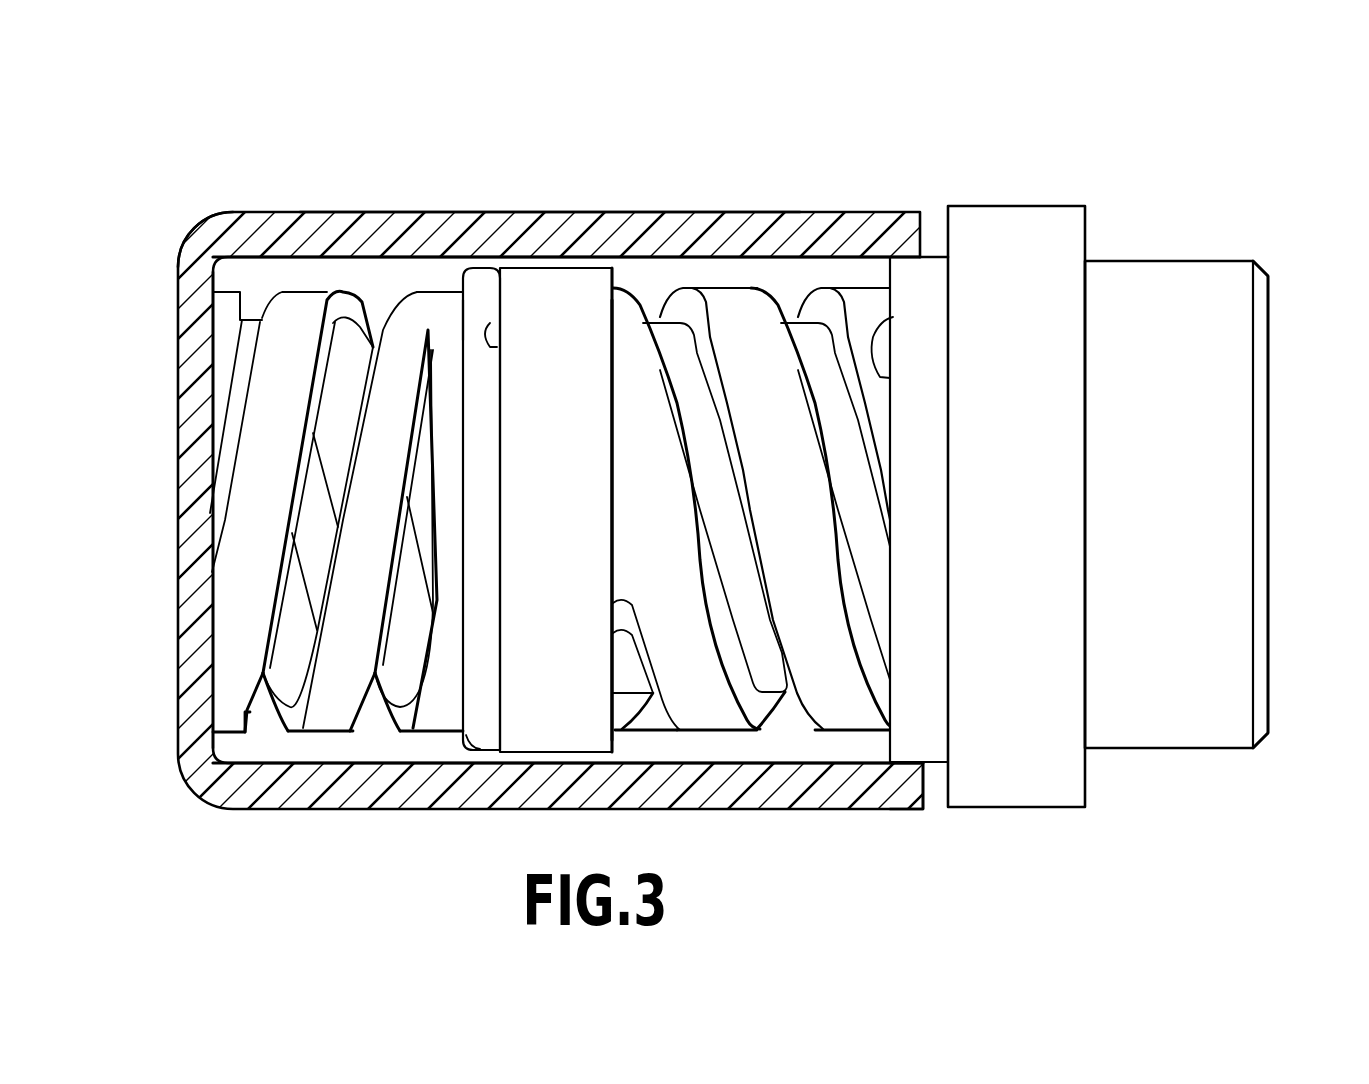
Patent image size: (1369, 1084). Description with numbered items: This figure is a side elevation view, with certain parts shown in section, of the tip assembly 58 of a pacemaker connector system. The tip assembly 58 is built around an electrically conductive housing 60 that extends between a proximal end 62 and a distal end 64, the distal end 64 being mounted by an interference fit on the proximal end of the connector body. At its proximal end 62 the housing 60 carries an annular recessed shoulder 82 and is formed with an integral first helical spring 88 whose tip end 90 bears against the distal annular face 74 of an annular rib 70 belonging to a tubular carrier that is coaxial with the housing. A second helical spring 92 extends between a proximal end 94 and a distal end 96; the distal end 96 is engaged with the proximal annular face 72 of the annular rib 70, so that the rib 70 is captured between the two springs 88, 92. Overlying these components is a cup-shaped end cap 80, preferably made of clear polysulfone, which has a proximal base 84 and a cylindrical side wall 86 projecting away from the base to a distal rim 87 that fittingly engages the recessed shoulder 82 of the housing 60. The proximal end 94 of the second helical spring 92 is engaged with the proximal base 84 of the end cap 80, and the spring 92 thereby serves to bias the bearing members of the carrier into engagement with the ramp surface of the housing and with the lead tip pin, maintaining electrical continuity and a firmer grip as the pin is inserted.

The tip assembly 58 is at (460, 145).
The housing 60 is at (1182, 258).
The proximal end of the housing 62 is at (490, 323).
The distal end of the housing 64 is at (1270, 518).
The annular rib 70 is at (481, 284).
The proximal annular face 72 is at (463, 328).
The distal annular face 74 is at (503, 410).
The end cap 80 is at (293, 232).
The annular recessed shoulder 82 is at (932, 252).
The proximal base 84 is at (184, 496).
The cylindrical side wall 86 is at (750, 226).
The distal rim 87 is at (927, 788).
The first helical spring 88 is at (712, 708).
The tip end 90 is at (610, 487).
The second helical spring 92 is at (338, 713).
The proximal end of the second helical spring 94 is at (212, 525).
The distal end of the second helical spring 96 is at (483, 668).